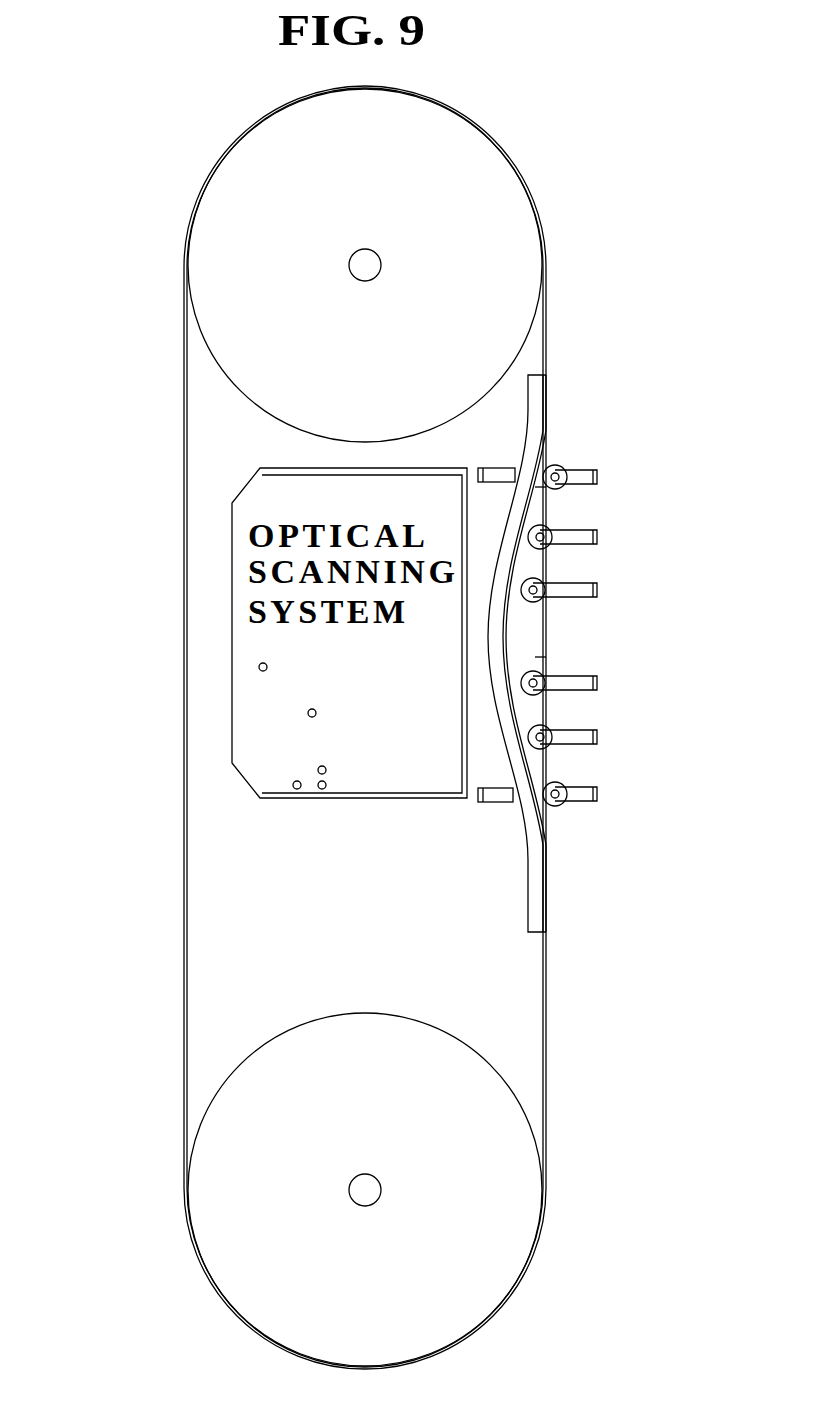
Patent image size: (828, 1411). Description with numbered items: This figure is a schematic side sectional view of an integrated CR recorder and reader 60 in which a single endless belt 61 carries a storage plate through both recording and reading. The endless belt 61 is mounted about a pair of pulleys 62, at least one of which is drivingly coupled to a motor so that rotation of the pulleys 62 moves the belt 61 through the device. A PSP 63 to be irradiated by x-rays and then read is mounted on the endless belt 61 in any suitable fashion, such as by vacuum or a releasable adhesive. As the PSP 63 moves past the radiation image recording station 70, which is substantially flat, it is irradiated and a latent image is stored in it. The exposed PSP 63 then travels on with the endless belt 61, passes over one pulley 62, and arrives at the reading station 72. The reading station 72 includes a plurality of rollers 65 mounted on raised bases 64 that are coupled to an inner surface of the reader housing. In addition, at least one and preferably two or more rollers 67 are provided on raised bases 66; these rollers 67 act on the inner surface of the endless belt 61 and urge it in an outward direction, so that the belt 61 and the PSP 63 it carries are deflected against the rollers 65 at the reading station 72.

The CR recorder and reader 60 is at (155, 188).
The endless belt 61 is at (174, 808).
The pulley 62 is at (262, 275).
The PSP 63 is at (483, 632).
The raised base 64 is at (609, 749).
The roller 65 is at (550, 592).
The raised base 66 is at (466, 805).
The roller 67 is at (511, 814).
The radiation image recording station 70 is at (172, 616).
The reading station 72 is at (561, 661).